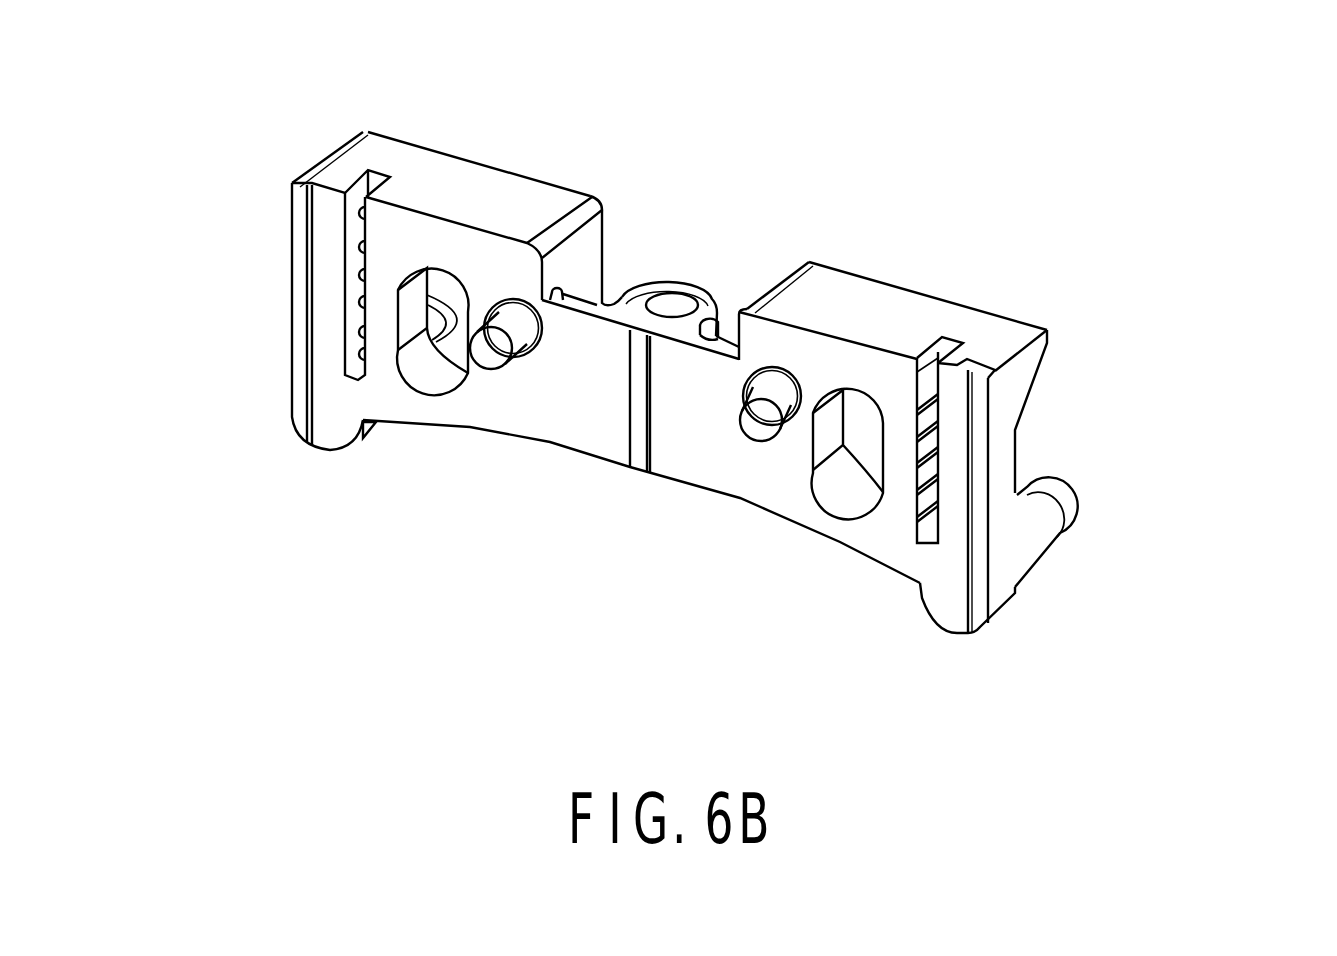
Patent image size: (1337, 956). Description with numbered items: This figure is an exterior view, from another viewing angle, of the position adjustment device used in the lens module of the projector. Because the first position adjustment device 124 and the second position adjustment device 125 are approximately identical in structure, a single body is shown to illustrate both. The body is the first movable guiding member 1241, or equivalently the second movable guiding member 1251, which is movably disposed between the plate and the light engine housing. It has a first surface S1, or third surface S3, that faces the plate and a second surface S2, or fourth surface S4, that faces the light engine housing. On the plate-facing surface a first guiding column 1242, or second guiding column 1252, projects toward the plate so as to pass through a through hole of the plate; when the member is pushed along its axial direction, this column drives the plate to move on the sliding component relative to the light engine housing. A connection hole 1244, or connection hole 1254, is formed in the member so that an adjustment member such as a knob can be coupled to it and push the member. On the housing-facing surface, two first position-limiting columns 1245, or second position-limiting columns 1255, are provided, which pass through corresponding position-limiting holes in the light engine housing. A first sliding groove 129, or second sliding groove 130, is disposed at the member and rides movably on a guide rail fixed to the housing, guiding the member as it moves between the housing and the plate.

The first position adjustment device 124 is at (718, 326).
The second position adjustment device 125 is at (1255, 52).
The first movable guiding member 1241 is at (457, 255).
The second movable guiding member 1251 is at (442, 168).
The first guiding column 1242 is at (1166, 531).
The second guiding column 1252 is at (1070, 493).
The connection hole 1244 is at (718, 234).
The connection hole 1254 is at (679, 290).
The first position-limiting column 1245 is at (677, 270).
The second position-limiting column 1255 is at (507, 320).
The first sliding groove 129 is at (644, 413).
The second sliding groove 130 is at (346, 217).
The first surface S1 is at (893, 411).
The third surface S3 is at (938, 283).
The second surface S2 is at (641, 441).
The fourth surface S4 is at (580, 422).